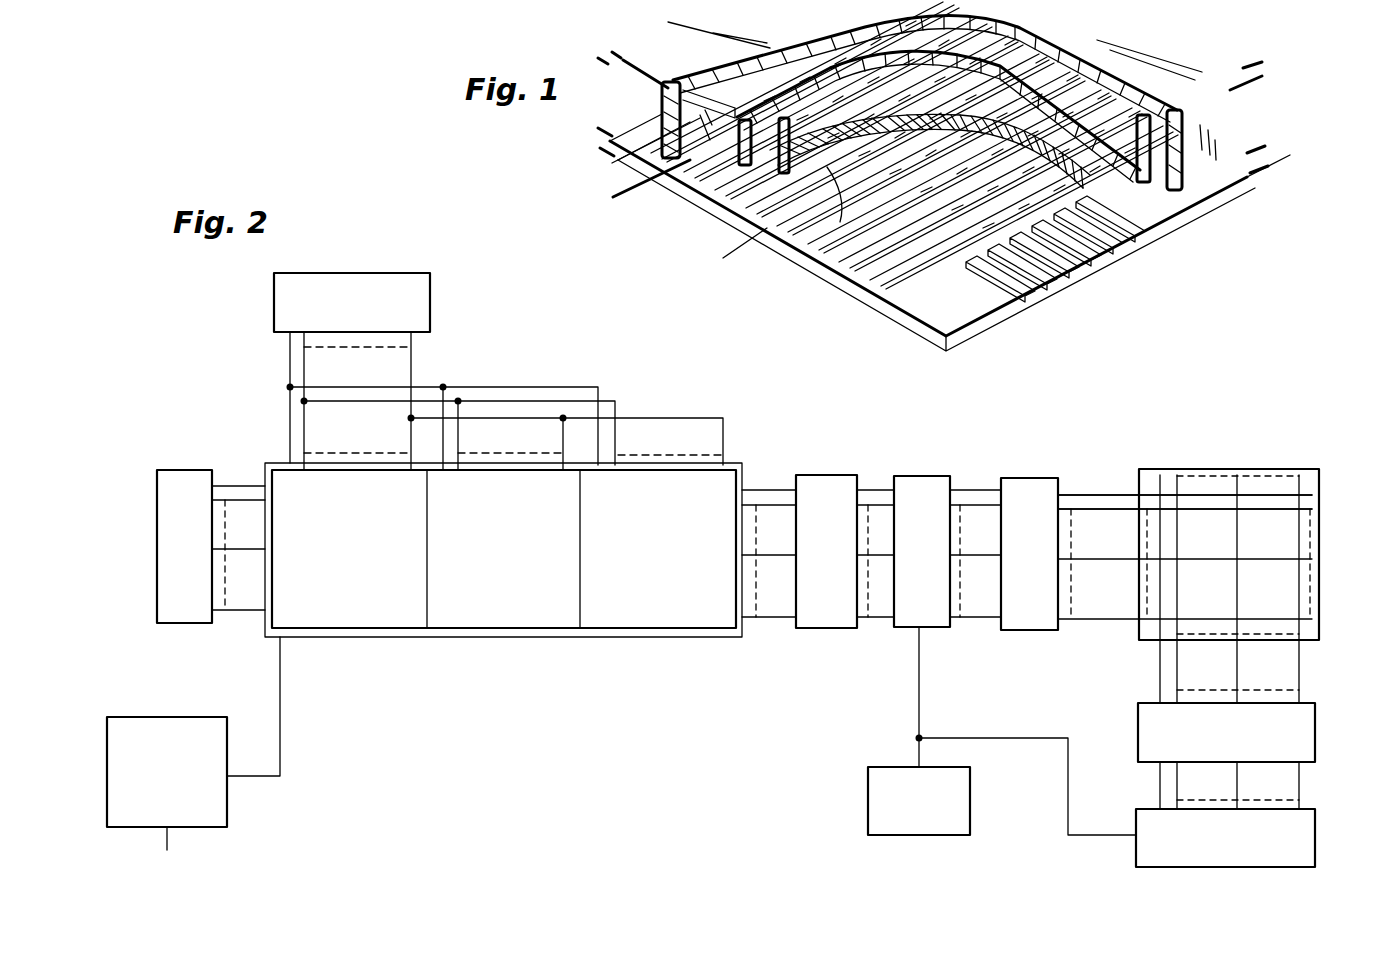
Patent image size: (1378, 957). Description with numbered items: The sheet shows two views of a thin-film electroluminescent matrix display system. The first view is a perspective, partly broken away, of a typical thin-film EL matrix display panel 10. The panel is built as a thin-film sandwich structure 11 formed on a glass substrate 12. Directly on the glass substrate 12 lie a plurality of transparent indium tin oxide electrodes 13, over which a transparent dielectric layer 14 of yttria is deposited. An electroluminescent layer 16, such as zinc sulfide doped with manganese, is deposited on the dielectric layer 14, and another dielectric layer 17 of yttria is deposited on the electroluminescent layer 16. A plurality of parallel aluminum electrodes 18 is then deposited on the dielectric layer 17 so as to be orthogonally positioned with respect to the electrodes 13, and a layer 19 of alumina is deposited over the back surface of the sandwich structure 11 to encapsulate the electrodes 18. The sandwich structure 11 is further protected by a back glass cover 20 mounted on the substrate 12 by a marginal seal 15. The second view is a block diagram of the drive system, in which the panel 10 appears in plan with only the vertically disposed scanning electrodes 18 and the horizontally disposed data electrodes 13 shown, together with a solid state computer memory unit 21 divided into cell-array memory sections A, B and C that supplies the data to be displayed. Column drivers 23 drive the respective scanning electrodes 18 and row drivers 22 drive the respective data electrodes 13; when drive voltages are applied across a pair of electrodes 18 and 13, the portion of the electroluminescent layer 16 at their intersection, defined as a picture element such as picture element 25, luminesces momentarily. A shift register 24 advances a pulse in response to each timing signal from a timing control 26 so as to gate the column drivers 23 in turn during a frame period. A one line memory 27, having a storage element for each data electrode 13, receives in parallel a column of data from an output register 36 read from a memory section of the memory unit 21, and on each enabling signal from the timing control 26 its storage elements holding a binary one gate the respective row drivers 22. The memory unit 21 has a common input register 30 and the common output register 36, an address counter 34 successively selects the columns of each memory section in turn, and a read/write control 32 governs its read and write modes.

In FIG. 1, the thin-film EL matrix display panel 10 is at (1093, 295).
In FIG. 2, the thin-film EL matrix display panel 10 is at (1336, 500).
In FIG. 1, the thin-film sandwich structure 11 is at (1121, 207).
In FIG. 1, the glass substrate 12 is at (847, 293).
In FIG. 1, the transparent indium tin oxide electrodes 13 is at (727, 227).
In FIG. 2, the transparent indium tin oxide electrodes 13 is at (1267, 492).
In FIG. 1, the transparent dielectric layer 14 is at (830, 170).
In FIG. 1, the marginal seal 15 is at (667, 113).
In FIG. 1, the electroluminescent layer 16 is at (727, 255).
In FIG. 1, the dielectric layer 17 is at (640, 183).
In FIG. 1, the parallel electrodes 18 is at (1153, 48).
In FIG. 2, the parallel electrodes 18 is at (1163, 535).
In FIG. 1, the layer of alumina 19 is at (612, 163).
In FIG. 1, the back glass cover 20 is at (1233, 90).
In FIG. 2, the solid state computer memory unit 21 is at (752, 462).
In FIG. 2, the row drivers 22 is at (1045, 480).
In FIG. 2, the column drivers 23 is at (1318, 705).
In FIG. 2, the shift register 24 is at (1310, 812).
In FIG. 2, the picture element 25 is at (1240, 492).
In FIG. 2, the timing control 26 is at (938, 836).
In FIG. 2, the one line memory 27 is at (935, 478).
In FIG. 2, the input register 30 is at (178, 468).
In FIG. 2, the read/write control 32 is at (232, 703).
In FIG. 2, the address counter 34 is at (432, 291).
In FIG. 2, the output register 36 is at (840, 476).